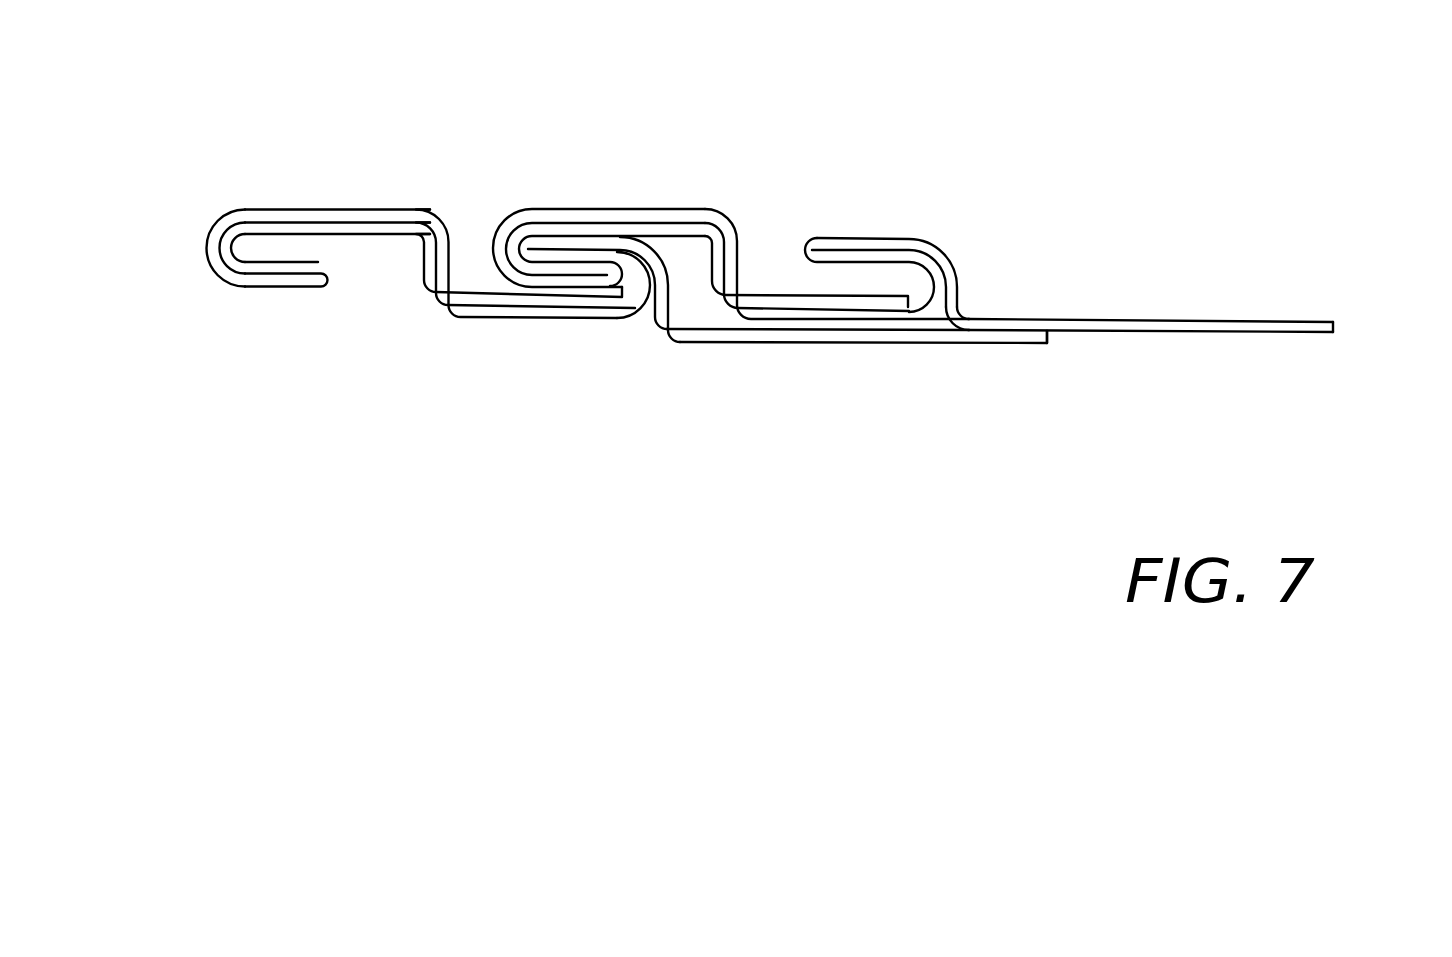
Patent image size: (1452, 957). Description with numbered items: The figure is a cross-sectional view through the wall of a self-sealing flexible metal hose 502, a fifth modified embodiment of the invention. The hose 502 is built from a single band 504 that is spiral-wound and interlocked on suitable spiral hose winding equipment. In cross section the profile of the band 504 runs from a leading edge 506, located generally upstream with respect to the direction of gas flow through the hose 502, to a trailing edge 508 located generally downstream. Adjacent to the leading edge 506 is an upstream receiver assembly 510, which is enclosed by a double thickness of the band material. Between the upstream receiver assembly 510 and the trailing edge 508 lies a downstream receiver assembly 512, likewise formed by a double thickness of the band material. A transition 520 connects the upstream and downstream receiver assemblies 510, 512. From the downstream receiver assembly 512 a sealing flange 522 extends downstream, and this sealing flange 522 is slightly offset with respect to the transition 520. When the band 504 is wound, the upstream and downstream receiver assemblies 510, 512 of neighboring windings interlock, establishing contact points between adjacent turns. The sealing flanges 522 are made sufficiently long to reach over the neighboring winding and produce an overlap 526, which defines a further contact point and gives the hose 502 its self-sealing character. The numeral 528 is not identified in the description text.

The flexible metal hose 502 is at (1077, 118).
The band 504 is at (295, 207).
The leading edge 506 is at (208, 248).
The trailing edge 508 is at (1048, 343).
The upstream receiver assembly 510 is at (214, 220).
The downstream receiver assembly 512 is at (656, 268).
The transition 520 is at (473, 318).
The sealing flange 522 is at (816, 341).
The overlap 526 is at (992, 318).
The junction 528 is at (987, 318).